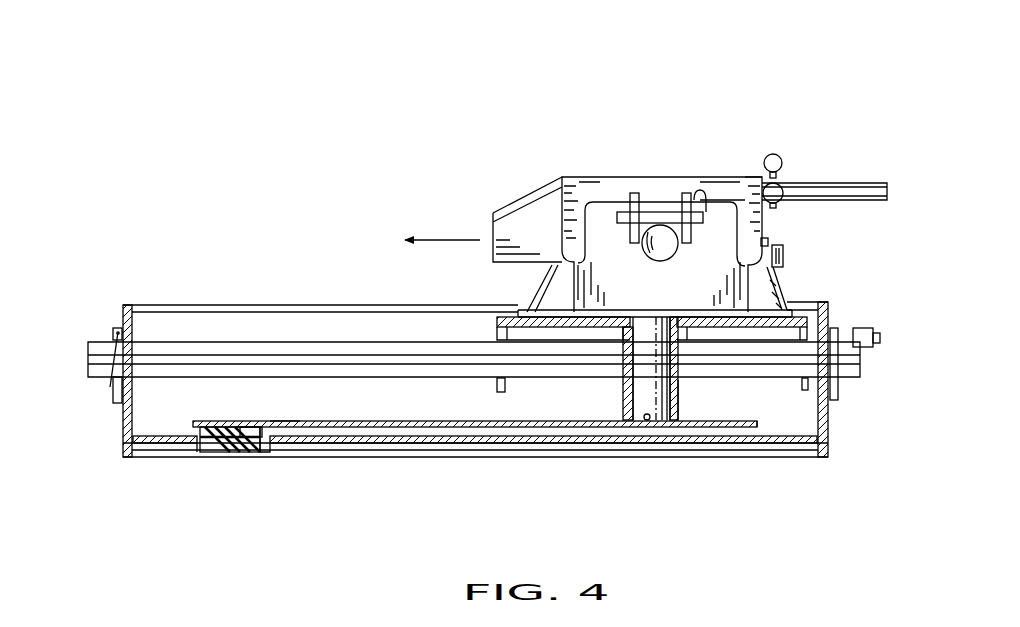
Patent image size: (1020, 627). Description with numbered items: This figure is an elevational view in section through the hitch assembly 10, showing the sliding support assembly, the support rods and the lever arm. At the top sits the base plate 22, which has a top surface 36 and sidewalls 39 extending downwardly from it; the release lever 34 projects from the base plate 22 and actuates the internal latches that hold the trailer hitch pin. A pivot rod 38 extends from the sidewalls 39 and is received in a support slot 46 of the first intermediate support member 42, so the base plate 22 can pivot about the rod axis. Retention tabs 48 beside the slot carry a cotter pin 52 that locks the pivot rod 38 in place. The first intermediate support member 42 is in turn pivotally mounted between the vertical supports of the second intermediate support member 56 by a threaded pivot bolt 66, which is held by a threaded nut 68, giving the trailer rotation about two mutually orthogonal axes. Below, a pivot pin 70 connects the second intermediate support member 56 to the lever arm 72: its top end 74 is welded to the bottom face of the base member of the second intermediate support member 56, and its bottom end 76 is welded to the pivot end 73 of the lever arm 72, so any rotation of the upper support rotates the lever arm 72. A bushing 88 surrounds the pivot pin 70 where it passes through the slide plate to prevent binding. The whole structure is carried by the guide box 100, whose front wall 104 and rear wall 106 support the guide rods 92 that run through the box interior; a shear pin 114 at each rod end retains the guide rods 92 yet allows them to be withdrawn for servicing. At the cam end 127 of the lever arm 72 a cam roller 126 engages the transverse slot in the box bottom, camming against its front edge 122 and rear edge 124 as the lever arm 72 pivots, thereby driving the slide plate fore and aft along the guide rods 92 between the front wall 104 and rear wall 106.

The hitch assembly 10 is at (484, 76).
The base plate 22 is at (749, 173).
The release lever 34 is at (870, 183).
The top surface 36 is at (583, 177).
The pivot rod 38 is at (670, 237).
The sidewalls 39 is at (562, 238).
The first intermediate support member 42 is at (593, 248).
The support slot 46 is at (718, 198).
The retention tabs 48 is at (687, 193).
The cotter pin 52 is at (623, 217).
The second intermediate support member 56 is at (787, 293).
The pivot bolt 66 is at (783, 258).
The threaded nut 68 is at (767, 240).
The pivot pin 70 is at (637, 403).
The lever arm 72 is at (437, 427).
The pivot end 73 is at (753, 424).
The top end 74 is at (640, 323).
The bottom end 76 is at (647, 420).
The bushing 88 is at (680, 407).
The guide rods 92 is at (102, 337).
The guide box 100 is at (249, 298).
The front wall 104 is at (830, 430).
The rear wall 106 is at (122, 417).
The shear pin 114 is at (118, 330).
The front edge 122 is at (287, 423).
The rear edge 124 is at (197, 432).
The cam roller 126 is at (240, 447).
The cam end 127 is at (240, 427).